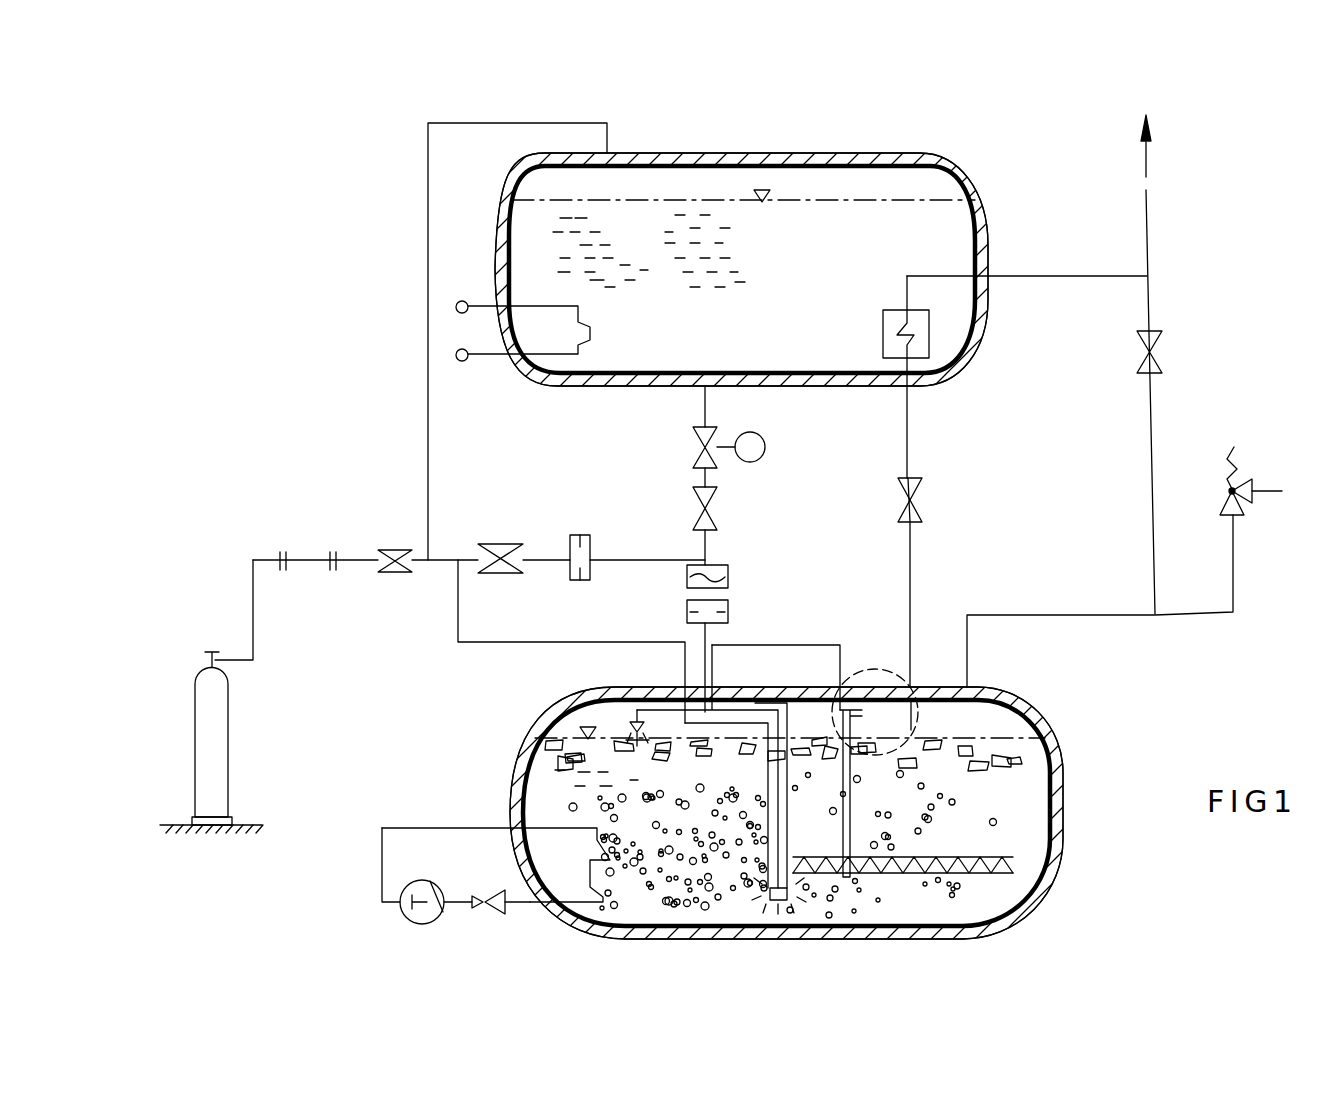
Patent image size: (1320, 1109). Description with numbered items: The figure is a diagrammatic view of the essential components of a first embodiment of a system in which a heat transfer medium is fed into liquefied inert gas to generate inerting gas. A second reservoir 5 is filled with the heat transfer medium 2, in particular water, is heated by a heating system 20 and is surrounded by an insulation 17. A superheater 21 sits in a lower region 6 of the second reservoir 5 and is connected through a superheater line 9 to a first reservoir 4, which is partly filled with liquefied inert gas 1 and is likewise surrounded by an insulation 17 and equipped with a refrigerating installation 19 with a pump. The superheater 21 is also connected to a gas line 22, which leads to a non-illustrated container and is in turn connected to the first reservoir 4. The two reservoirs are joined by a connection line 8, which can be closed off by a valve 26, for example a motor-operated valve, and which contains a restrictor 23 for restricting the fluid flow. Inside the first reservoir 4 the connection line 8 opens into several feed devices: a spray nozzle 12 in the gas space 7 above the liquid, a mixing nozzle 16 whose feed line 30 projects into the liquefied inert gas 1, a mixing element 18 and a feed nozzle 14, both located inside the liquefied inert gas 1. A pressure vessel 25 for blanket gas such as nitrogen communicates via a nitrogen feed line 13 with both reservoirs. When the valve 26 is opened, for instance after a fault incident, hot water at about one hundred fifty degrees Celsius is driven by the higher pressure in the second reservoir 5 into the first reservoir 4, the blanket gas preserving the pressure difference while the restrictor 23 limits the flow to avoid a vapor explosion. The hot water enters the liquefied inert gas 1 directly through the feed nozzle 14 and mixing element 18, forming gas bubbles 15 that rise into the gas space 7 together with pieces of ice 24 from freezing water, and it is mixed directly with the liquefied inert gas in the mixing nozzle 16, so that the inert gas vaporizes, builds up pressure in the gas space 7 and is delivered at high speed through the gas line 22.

The liquefied inert gas 1 is at (572, 727).
The heat transfer medium 2 is at (566, 253).
The first reservoir 4 is at (1010, 775).
The second reservoir 5 is at (810, 225).
The lower region 6 is at (835, 345).
The gas space 7 is at (568, 687).
The connection line 8 is at (700, 405).
The superheater line 9 is at (1075, 274).
The spray nozzle 12 is at (632, 728).
The nitrogen feed line 13 is at (428, 175).
The feed nozzle 14 is at (792, 890).
The gas bubbles 15 is at (567, 806).
The mixing nozzle 16 is at (926, 682).
The insulation 17 is at (962, 178).
The mixing element 18 is at (963, 868).
The refrigerating installation 19 is at (428, 920).
The heating system 20 is at (496, 362).
The superheater 21 is at (930, 328).
The gas line 22 is at (1150, 218).
The restrictor 23 is at (730, 615).
The pieces of ice 24 is at (528, 752).
The pressure vessel 25 is at (215, 700).
The valve 26 is at (695, 500).
The feed line 30 is at (852, 820).